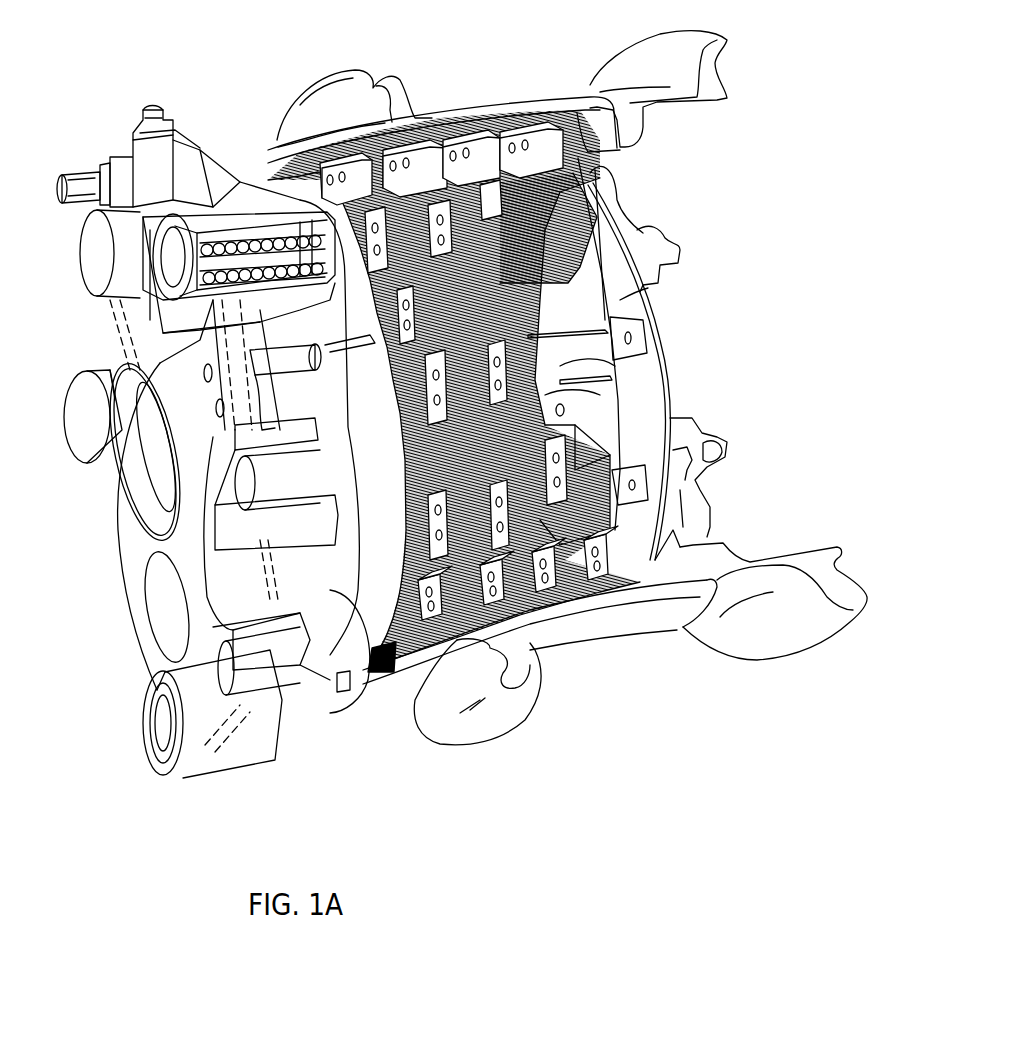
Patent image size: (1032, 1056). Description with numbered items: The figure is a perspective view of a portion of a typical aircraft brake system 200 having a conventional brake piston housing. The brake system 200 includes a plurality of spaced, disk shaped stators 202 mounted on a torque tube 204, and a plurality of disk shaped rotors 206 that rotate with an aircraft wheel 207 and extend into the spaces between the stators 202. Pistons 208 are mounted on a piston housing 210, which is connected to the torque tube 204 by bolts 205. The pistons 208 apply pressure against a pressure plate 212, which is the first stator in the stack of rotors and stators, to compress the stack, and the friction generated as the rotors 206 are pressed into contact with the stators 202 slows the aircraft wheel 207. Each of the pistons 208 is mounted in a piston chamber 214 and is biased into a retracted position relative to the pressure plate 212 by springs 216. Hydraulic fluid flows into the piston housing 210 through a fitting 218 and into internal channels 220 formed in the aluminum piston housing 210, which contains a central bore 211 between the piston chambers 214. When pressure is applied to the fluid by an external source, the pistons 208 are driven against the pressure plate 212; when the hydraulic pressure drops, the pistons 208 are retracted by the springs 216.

The aircraft brake system 200 is at (332, 752).
The stators 202 is at (557, 560).
The torque tube 204 is at (568, 372).
The bolts 205 is at (178, 433).
The rotors 206 is at (370, 170).
The aircraft wheel 207 is at (440, 122).
The pistons 208 is at (218, 268).
The piston housing 210 is at (158, 178).
The central bore 211 is at (222, 420).
The pressure plate 212 is at (402, 630).
The piston chamber 214 is at (250, 225).
The springs 216 is at (228, 280).
The fitting 218 is at (100, 170).
The internal channels 220 is at (252, 598).